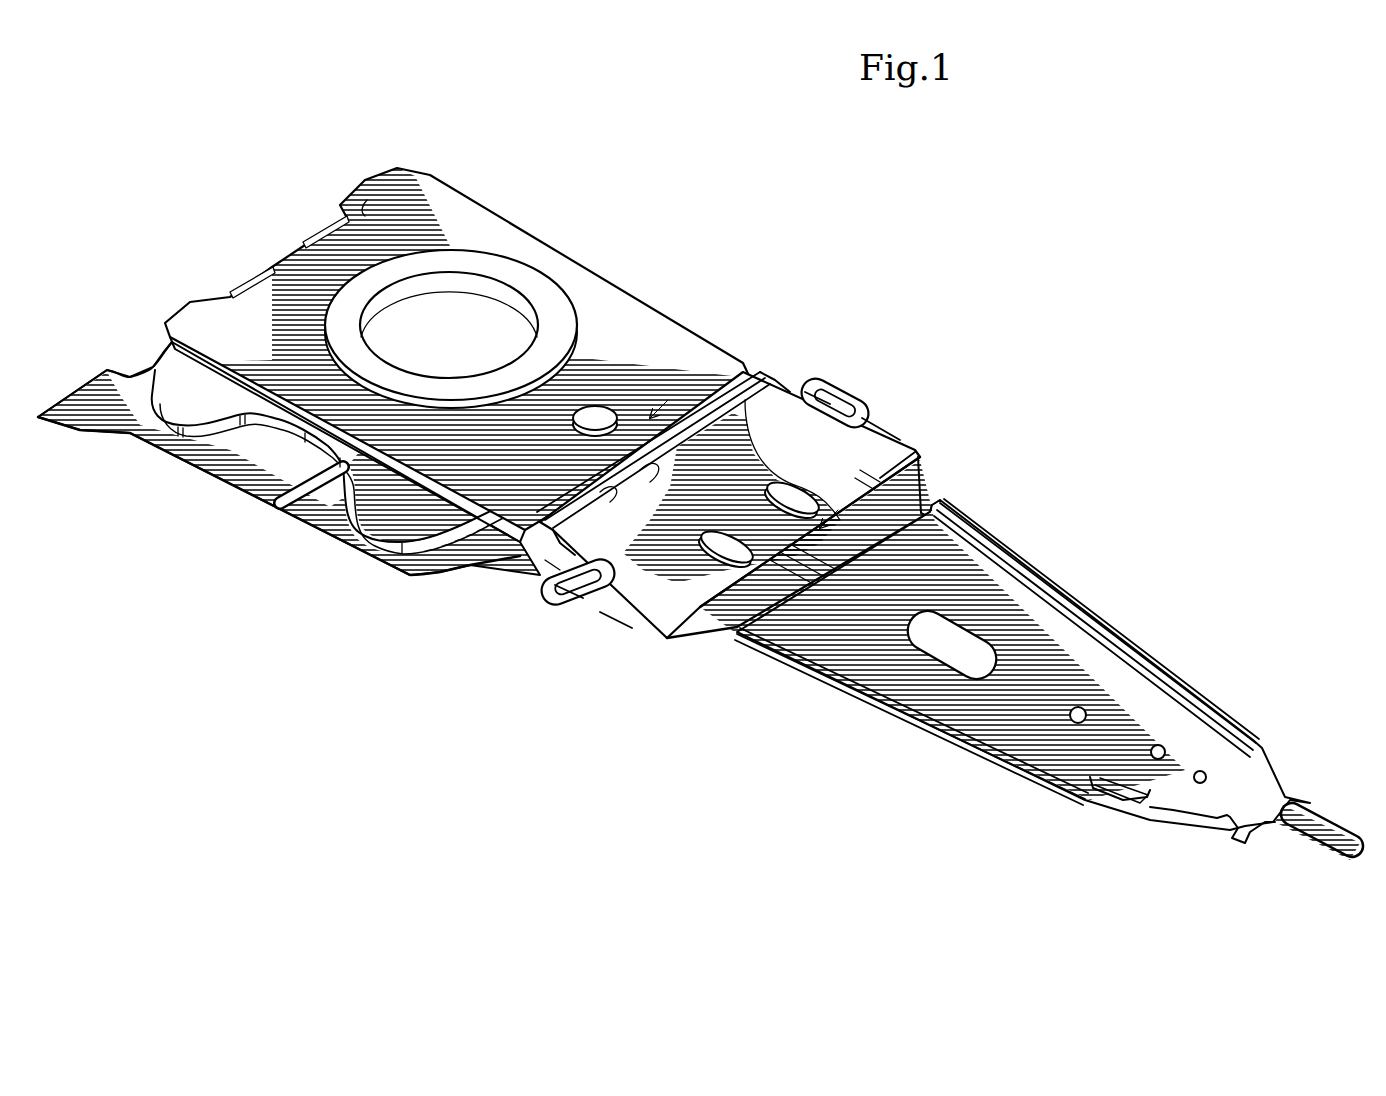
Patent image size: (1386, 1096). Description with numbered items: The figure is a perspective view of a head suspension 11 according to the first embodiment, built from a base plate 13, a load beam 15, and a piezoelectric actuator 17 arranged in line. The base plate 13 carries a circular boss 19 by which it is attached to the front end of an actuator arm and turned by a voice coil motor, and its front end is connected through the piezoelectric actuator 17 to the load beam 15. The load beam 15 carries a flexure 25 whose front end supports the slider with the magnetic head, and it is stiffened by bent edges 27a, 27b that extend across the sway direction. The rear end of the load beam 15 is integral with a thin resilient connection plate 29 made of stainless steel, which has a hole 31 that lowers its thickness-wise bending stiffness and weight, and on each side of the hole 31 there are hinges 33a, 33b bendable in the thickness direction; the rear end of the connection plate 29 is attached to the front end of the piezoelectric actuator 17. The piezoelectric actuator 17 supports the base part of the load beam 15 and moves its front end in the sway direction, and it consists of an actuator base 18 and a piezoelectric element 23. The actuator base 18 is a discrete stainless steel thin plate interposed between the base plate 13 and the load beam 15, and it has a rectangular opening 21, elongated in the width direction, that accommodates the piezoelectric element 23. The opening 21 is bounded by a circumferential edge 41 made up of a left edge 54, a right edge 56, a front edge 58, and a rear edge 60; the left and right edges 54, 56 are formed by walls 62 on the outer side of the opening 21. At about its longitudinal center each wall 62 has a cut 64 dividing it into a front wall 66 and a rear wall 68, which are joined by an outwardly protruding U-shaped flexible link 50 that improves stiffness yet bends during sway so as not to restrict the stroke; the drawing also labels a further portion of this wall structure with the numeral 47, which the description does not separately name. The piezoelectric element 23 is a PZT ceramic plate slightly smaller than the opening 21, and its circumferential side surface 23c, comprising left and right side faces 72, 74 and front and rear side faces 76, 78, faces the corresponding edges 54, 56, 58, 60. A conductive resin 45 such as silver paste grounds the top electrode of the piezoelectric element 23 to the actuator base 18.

The head suspension 11 is at (1140, 192).
The base plate 13 is at (555, 265).
The load beam 15 is at (1057, 653).
The piezoelectric actuator 17 is at (973, 318).
The actuator base 18 is at (860, 485).
The circular boss 19 is at (455, 278).
The opening 21 is at (755, 385).
The piezoelectric element 23 is at (818, 400).
The circumferential side surface 23c is at (545, 535).
The flexure 25 is at (1152, 805).
The bent edge 27a is at (1017, 567).
The bent edge 27b is at (927, 720).
The connection plate 29 is at (935, 498).
The hole 31 is at (737, 632).
The hinge 33a is at (915, 510).
The hinge 33b is at (752, 614).
The circumferential edge 41 is at (605, 485).
The conductive resin 45 is at (812, 565).
The flexure metal strip 47 is at (728, 428).
The flexible link 50 is at (850, 382).
The left edge 54 is at (870, 456).
The right edge 56 is at (655, 605).
The front edge 58 is at (925, 465).
The rear edge 60 is at (612, 507).
The wall 62 is at (835, 400).
The cut 64 is at (868, 412).
The front wall 66 is at (882, 428).
The rear wall 68 is at (776, 396).
The left side face 72 is at (782, 440).
The right side face 74 is at (545, 575).
The front side face 76 is at (685, 600).
The rear side face 78 is at (652, 480).